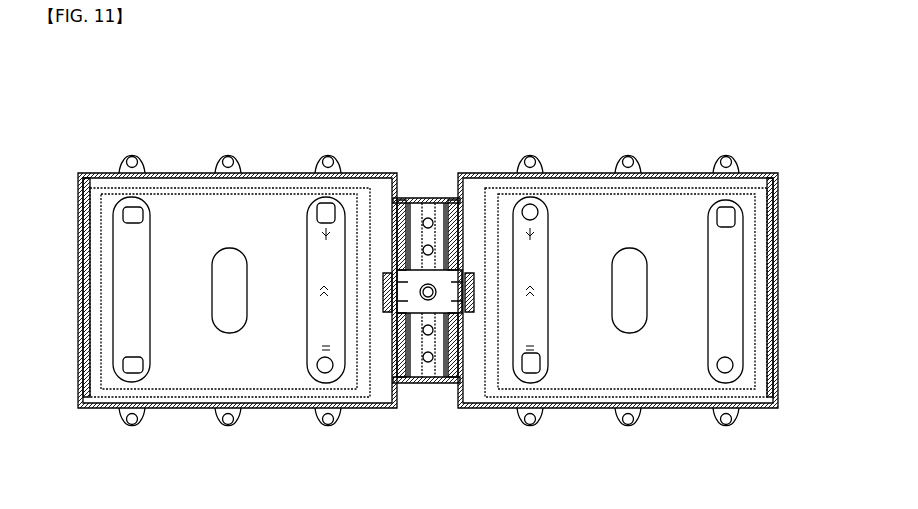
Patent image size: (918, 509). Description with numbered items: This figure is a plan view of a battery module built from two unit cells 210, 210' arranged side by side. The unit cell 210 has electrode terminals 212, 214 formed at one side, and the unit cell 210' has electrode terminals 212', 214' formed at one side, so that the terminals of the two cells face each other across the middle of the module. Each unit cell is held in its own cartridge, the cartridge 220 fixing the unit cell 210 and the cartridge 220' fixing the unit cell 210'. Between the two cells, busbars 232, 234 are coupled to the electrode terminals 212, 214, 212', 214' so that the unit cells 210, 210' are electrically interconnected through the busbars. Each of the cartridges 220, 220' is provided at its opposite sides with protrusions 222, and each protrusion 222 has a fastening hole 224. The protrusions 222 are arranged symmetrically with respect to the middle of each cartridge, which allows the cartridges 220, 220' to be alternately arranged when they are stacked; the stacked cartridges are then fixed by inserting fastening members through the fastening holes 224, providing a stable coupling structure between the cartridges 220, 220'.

The unit cell 210 is at (237, 257).
The unit cell 210' is at (629, 257).
The electrode terminal 212 is at (390, 196).
The electrode terminal 212' is at (474, 206).
The electrode terminal 214 is at (378, 384).
The electrode terminal 214' is at (465, 388).
The cartridge 220 is at (215, 273).
The cartridge 220' is at (650, 265).
The protrusion 222 is at (143, 172).
The fastening hole 224 is at (132, 158).
The busbar 232 is at (430, 200).
The busbar 234 is at (428, 377).